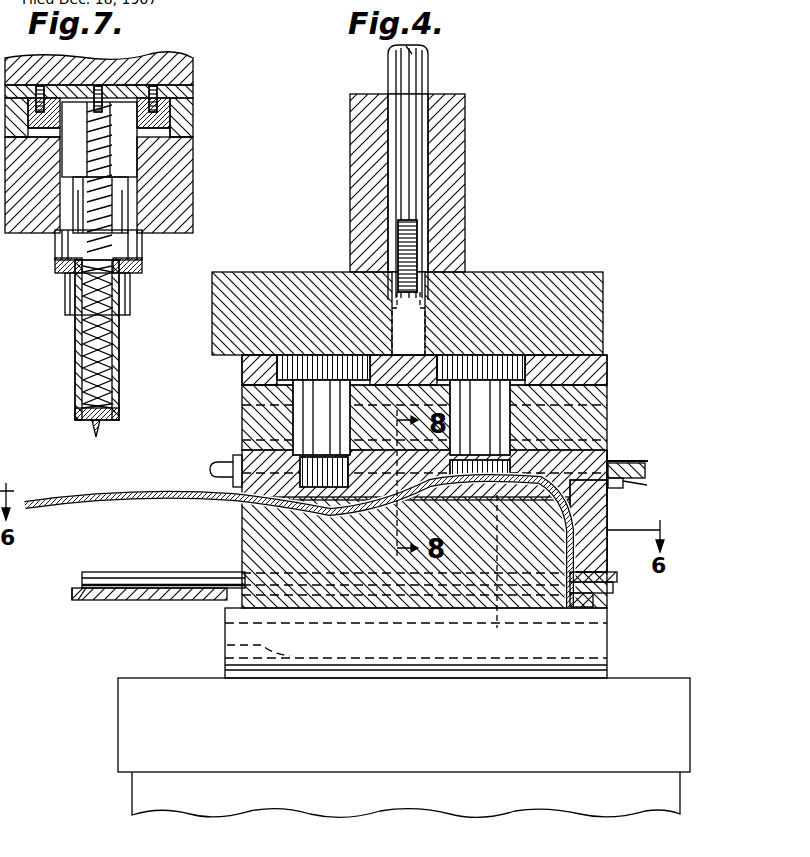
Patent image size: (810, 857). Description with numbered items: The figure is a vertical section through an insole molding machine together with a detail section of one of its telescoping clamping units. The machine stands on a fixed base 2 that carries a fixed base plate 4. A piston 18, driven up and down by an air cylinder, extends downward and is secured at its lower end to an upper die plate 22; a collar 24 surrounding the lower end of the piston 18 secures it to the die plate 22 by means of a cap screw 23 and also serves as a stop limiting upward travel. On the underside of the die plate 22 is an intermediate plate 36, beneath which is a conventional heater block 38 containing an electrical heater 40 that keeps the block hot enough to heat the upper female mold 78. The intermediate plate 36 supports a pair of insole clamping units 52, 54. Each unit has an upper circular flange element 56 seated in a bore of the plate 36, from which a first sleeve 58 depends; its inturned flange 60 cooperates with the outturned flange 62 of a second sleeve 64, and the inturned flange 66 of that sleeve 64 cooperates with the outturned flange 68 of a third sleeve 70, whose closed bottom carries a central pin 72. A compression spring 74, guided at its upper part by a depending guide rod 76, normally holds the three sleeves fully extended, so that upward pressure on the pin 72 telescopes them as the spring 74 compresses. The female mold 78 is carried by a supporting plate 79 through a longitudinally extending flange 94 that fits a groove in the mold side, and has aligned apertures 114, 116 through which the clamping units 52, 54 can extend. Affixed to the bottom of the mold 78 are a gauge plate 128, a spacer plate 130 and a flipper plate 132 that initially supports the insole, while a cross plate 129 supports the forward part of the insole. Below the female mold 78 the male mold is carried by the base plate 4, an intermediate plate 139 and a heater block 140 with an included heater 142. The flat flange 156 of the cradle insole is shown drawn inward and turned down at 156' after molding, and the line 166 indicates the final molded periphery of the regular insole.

In FIG. 4, the fixed base 2 is at (658, 792).
In FIG. 4, the fixed base plate 4 is at (668, 703).
In FIG. 4, the piston 18 is at (420, 68).
In FIG. 7, the upper die plate 22 is at (155, 62).
In FIG. 4, the upper die plate 22 is at (570, 292).
In FIG. 4, the cap screw 23 is at (418, 293).
In FIG. 4, the collar 24 is at (445, 152).
In FIG. 7, the intermediate plate 36 is at (195, 94).
In FIG. 4, the intermediate plate 36 is at (600, 368).
In FIG. 4, the heater block 38 is at (243, 450).
In FIG. 4, the electrical heater 40 is at (605, 433).
In FIG. 4, the insole clamping unit 52 is at (310, 417).
In FIG. 4, the insole clamping unit 54 is at (497, 415).
In FIG. 7, the upper circular flange element 56 is at (143, 127).
In FIG. 7, the first sleeve 58 is at (140, 150).
In FIG. 7, the inturned flange 60 is at (58, 264).
In FIG. 7, the outturned flange 62 is at (130, 185).
In FIG. 7, the second sleeve 64 is at (57, 240).
In FIG. 7, the inturned flange 66 is at (72, 308).
In FIG. 7, the outturned flange 68 is at (68, 281).
In FIG. 7, the third sleeve 70 is at (80, 375).
In FIG. 7, the pin 72 is at (94, 428).
In FIG. 7, the compression spring 74 is at (114, 326).
In FIG. 7, the guide rod 76 is at (100, 165).
In FIG. 4, the upper female mold 78 is at (608, 544).
In FIG. 4, the supporting plate 79 is at (643, 464).
In FIG. 4, the longitudinally extending flange 94 is at (623, 484).
In FIG. 4, the aperture 114 is at (243, 508).
In FIG. 4, the aperture 116 is at (628, 468).
In FIG. 4, the gauge plate 128 is at (148, 578).
In FIG. 4, the cross plate 129 is at (72, 594).
In FIG. 4, the spacer plate 130 is at (113, 588).
In FIG. 4, the flipper plate 132 is at (597, 598).
In FIG. 4, the intermediate plate 139 is at (397, 672).
In FIG. 4, the heater block 140 is at (433, 649).
In FIG. 4, the heater 142 is at (228, 645).
In FIG. 4, the flange of the cradle insole 156 is at (497, 574).
In FIG. 4, the molded downturned flange portion 156' is at (615, 532).
In FIG. 4, the final molded periphery of the regular insole 166 is at (609, 499).